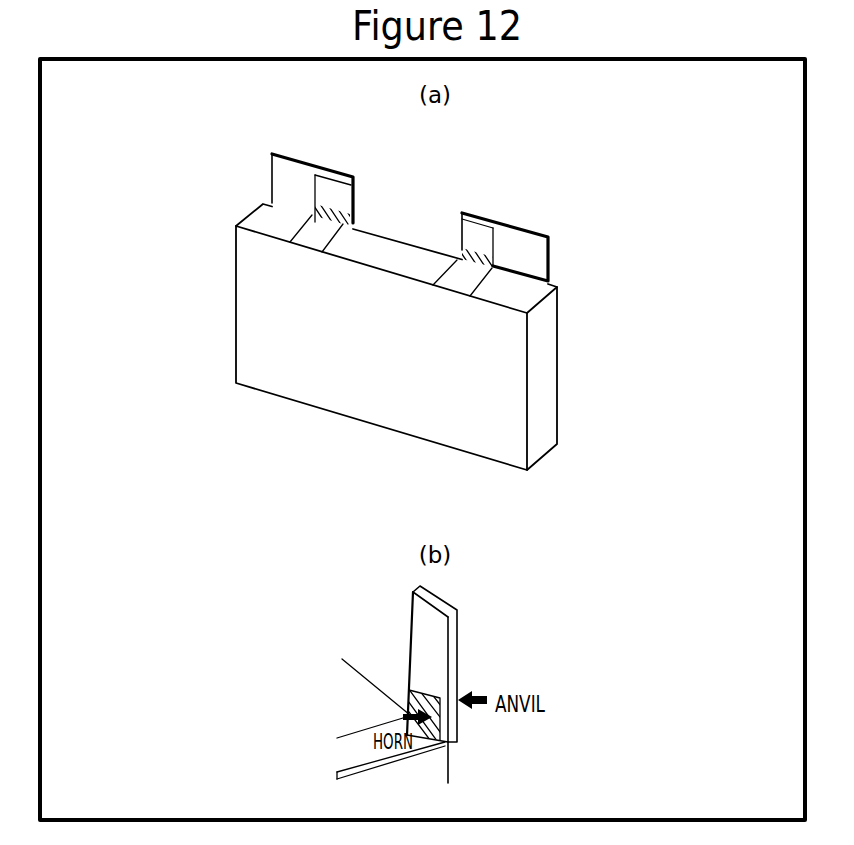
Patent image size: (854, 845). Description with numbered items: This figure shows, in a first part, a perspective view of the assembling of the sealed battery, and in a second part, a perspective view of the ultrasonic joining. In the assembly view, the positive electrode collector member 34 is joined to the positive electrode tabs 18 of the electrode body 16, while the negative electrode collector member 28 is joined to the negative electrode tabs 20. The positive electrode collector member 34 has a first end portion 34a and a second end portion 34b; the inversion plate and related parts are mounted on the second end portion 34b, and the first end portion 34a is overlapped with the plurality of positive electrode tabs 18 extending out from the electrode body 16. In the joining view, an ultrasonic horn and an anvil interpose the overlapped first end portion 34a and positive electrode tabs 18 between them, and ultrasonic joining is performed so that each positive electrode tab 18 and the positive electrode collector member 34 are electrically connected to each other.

The electrode body 16 is at (575, 377).
The positive electrode tabs 18 is at (474, 237).
The negative electrode tabs 20 is at (350, 192).
The negative electrode collector member 28 is at (339, 170).
The positive electrode collector member 34 is at (512, 469).
The first end portion 34a is at (484, 212).
The second end portion 34b is at (553, 255).